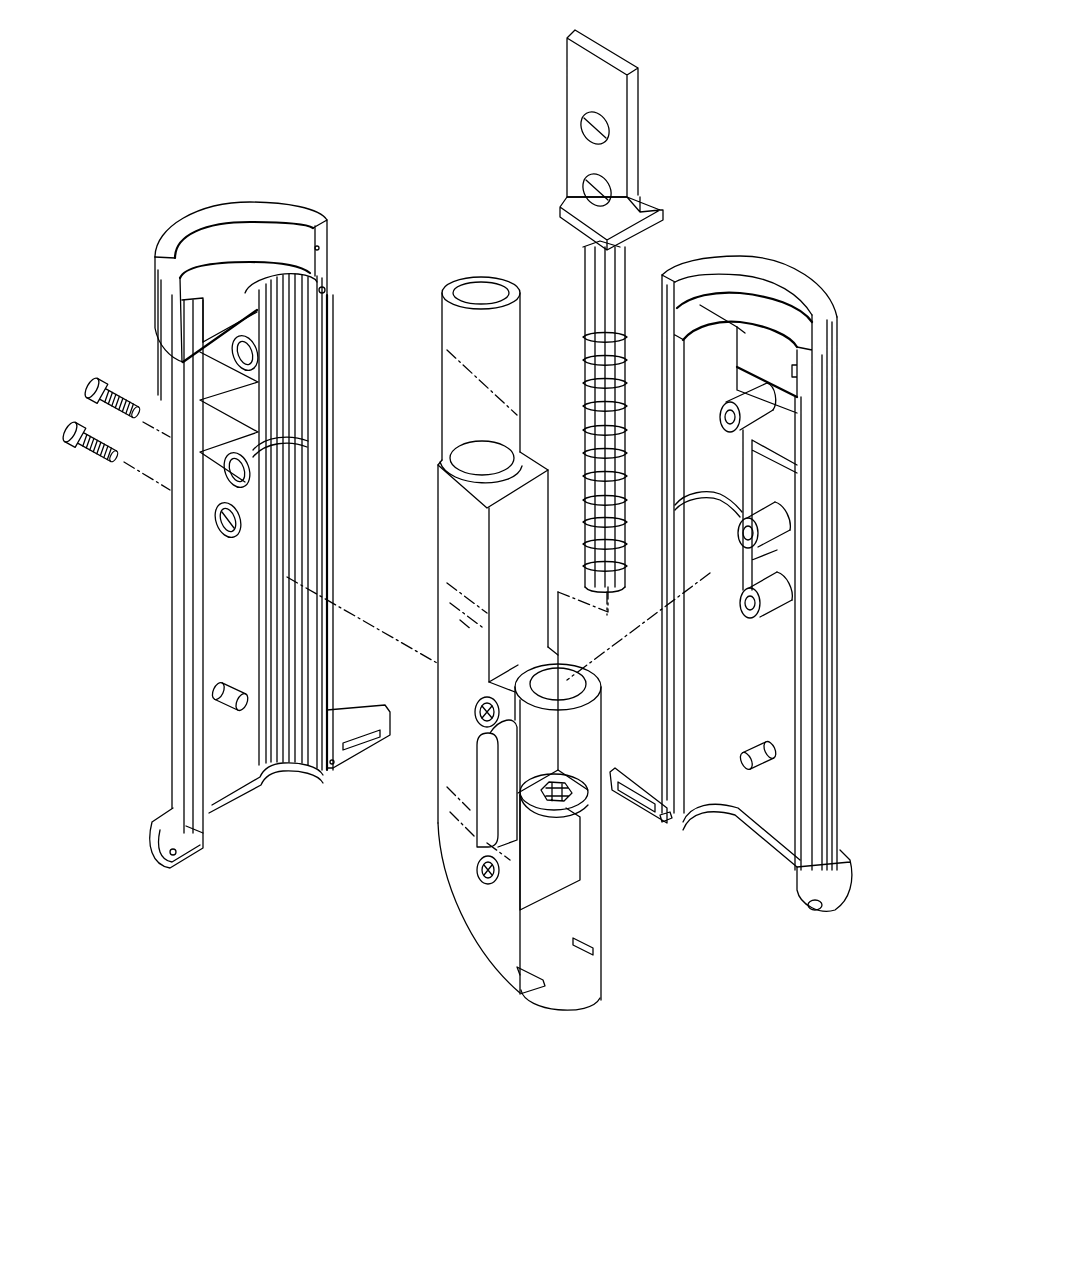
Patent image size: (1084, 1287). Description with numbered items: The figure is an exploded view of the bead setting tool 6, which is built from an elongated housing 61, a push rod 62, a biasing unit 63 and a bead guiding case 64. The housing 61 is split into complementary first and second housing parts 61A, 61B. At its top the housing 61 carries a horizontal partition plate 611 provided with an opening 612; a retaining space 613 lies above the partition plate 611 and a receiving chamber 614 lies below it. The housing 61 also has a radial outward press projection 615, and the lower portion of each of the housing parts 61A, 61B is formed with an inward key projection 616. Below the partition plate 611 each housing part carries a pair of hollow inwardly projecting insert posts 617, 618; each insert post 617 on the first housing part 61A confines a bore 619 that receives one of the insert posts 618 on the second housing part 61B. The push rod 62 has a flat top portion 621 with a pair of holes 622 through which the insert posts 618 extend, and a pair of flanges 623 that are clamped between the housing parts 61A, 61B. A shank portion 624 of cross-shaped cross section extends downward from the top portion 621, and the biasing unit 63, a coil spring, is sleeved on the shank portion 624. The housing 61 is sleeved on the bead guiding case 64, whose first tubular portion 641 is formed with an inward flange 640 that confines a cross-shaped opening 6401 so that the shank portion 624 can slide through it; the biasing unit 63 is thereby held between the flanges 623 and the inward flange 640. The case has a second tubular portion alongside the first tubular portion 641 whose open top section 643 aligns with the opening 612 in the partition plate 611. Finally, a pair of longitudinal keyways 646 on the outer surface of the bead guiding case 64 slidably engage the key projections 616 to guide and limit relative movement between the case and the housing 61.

The bead setting tool 6 is at (413, 213).
The elongated housing 61 is at (835, 423).
The first housing part 61A is at (172, 567).
The second housing part 61B is at (833, 535).
The horizontal partition plate 611 is at (218, 292).
The opening 612 is at (275, 288).
The retaining space 613 is at (233, 225).
The receiving chamber 614 is at (285, 500).
The radial outward press projection 615 is at (365, 717).
The inward key projection 616 is at (217, 697).
The hollow inwardly projecting insert post 617 is at (212, 447).
The hollow inwardly projecting insert post 618 is at (770, 523).
The bore 619 is at (232, 535).
The push rod 62 is at (637, 135).
The flat top portion 621 is at (610, 95).
The holes 622 is at (583, 115).
The flanges 623 is at (645, 202).
The shank portion 624 is at (633, 352).
The biasing unit 63 is at (620, 325).
The bead guiding case 64 is at (443, 837).
The inward flange 640 is at (590, 848).
The cross-shaped opening 6401 is at (593, 793).
The first tubular portion 641 is at (567, 680).
The open top section 643 is at (475, 287).
The longitudinal keyways 646 is at (483, 767).